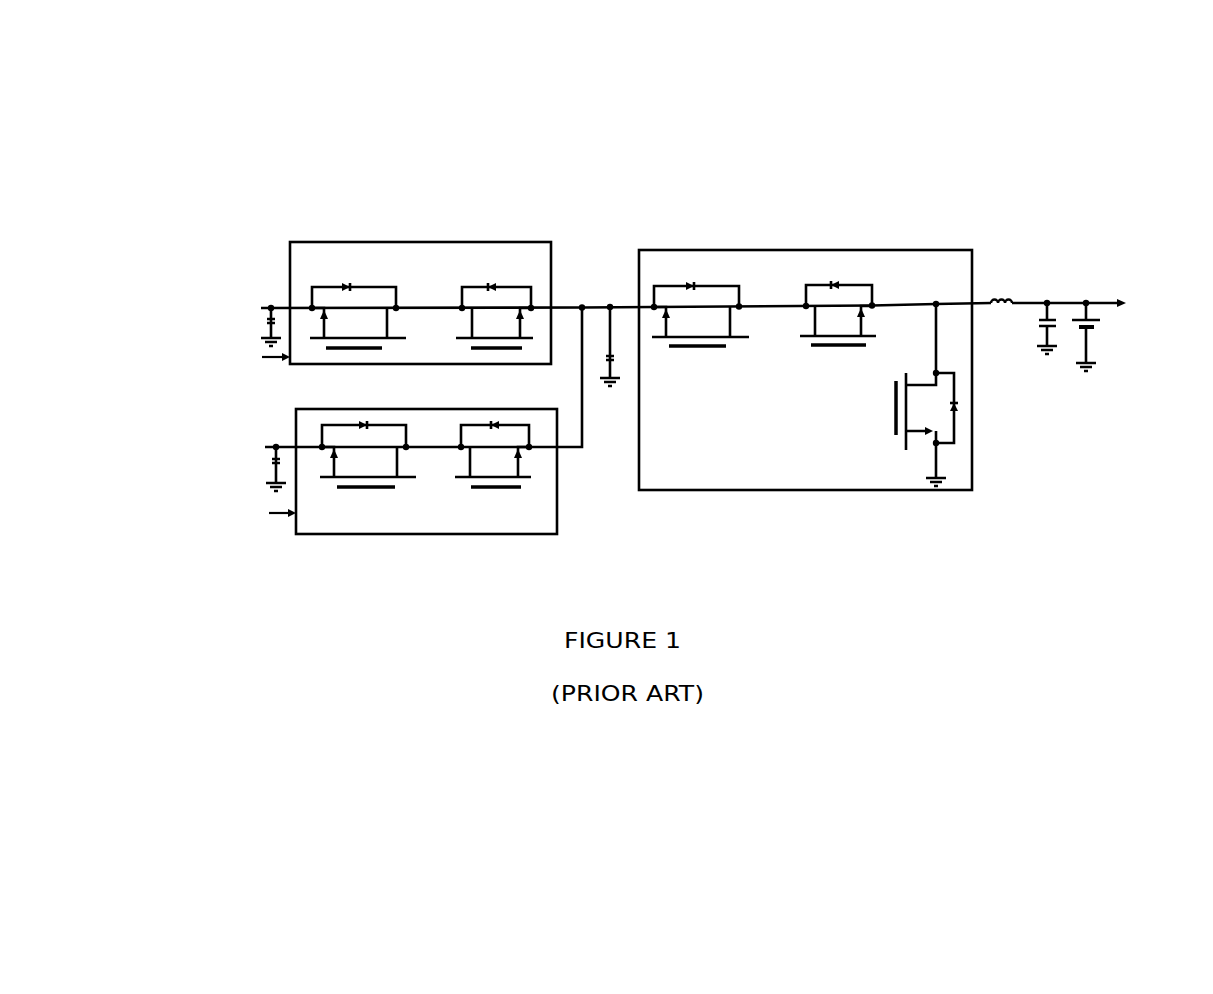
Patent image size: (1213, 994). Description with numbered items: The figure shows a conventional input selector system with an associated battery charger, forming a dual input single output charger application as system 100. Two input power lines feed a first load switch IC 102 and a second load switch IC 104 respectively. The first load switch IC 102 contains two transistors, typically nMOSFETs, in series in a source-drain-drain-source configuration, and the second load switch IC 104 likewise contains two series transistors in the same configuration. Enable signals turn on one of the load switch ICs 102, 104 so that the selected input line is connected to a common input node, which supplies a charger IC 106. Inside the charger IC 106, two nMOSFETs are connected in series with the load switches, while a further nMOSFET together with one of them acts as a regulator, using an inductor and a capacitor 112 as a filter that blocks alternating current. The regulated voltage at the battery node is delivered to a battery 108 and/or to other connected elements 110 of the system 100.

The system 100 is at (615, 105).
The first load switch IC 102 is at (416, 238).
The second load switch IC 104 is at (436, 542).
The charger IC 106 is at (789, 243).
The battery 108 is at (1108, 330).
The other connected elements 110 is at (1143, 304).
The capacitor 112 is at (1030, 330).